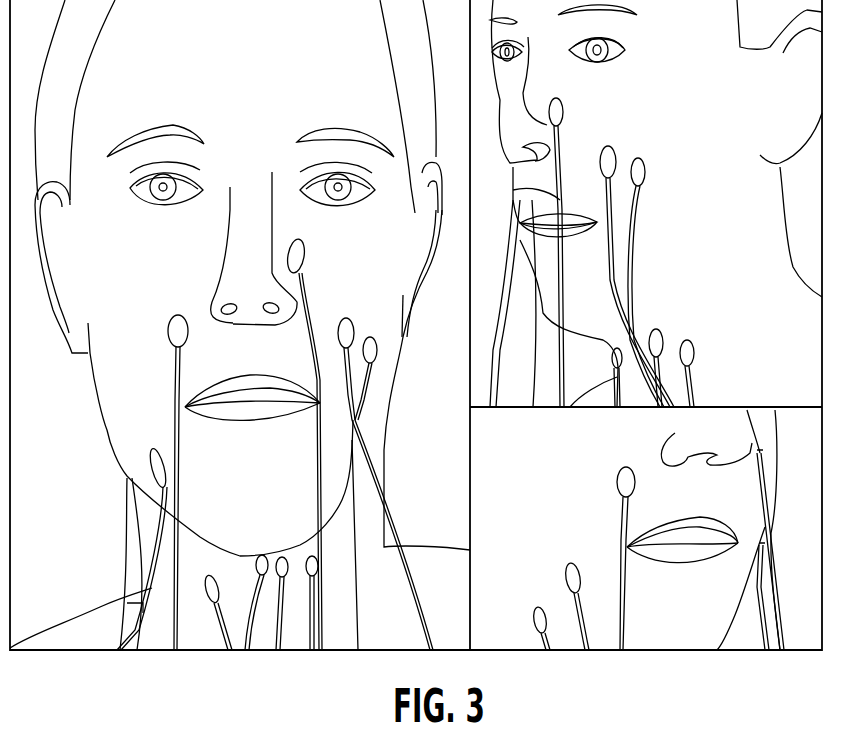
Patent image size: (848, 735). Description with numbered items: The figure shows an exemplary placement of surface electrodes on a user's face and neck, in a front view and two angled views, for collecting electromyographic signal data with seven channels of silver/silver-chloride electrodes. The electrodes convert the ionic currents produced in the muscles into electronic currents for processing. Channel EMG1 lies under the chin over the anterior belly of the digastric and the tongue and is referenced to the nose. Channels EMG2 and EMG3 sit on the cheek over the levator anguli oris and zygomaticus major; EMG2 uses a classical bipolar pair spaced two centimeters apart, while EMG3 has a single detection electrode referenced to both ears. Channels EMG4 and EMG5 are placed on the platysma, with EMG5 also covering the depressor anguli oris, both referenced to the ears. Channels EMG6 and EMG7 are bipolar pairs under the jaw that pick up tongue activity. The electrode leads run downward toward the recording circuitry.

The EMG channel one EMG1 is at (613, 347).
The EMG channel two EMG2 is at (353, 338).
The EMG channel three EMG3 is at (402, 471).
The EMG channel four EMG4 is at (570, 592).
The EMG channel five EMG5 is at (535, 611).
The EMG channel six EMG6 is at (262, 570).
The EMG channel seven EMG7 is at (308, 561).